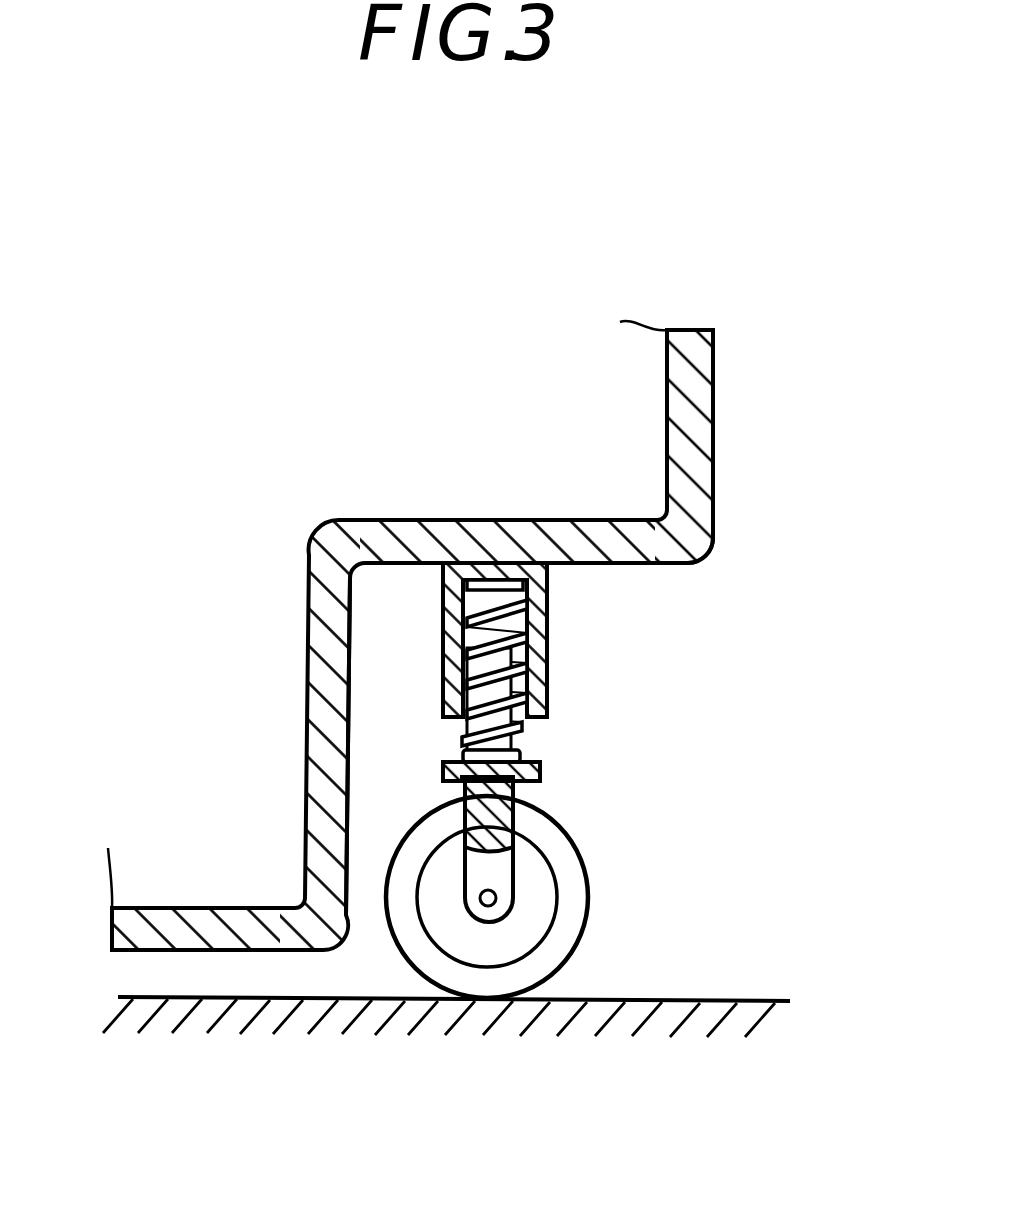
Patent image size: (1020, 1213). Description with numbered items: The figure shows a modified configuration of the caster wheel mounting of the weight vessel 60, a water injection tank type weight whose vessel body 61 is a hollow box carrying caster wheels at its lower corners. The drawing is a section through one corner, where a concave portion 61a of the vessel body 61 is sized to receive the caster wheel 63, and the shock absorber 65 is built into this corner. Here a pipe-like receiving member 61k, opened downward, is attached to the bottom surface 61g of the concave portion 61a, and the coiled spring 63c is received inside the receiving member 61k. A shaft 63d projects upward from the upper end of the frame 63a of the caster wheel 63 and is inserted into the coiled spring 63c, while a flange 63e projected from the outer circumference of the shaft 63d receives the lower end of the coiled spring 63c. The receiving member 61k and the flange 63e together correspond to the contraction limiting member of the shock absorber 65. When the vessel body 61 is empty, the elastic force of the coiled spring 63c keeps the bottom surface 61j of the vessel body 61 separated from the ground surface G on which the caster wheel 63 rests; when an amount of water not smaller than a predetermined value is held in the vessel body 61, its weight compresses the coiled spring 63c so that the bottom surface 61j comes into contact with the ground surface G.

The weight vessel 60 is at (461, 632).
The vessel body 61 is at (419, 659).
The concave portion 61a is at (350, 848).
The bottom surface of the concave portion 61g is at (650, 565).
The bottom surface of the vessel body 61j is at (197, 952).
The receiving member 61k is at (548, 657).
The caster wheel 63 is at (588, 893).
The frame 63a is at (497, 827).
The coiled spring 63c is at (429, 679).
The shaft 63d is at (470, 725).
The flange 63e is at (535, 768).
The shock absorber 65 is at (458, 742).
The ground surface G is at (703, 999).